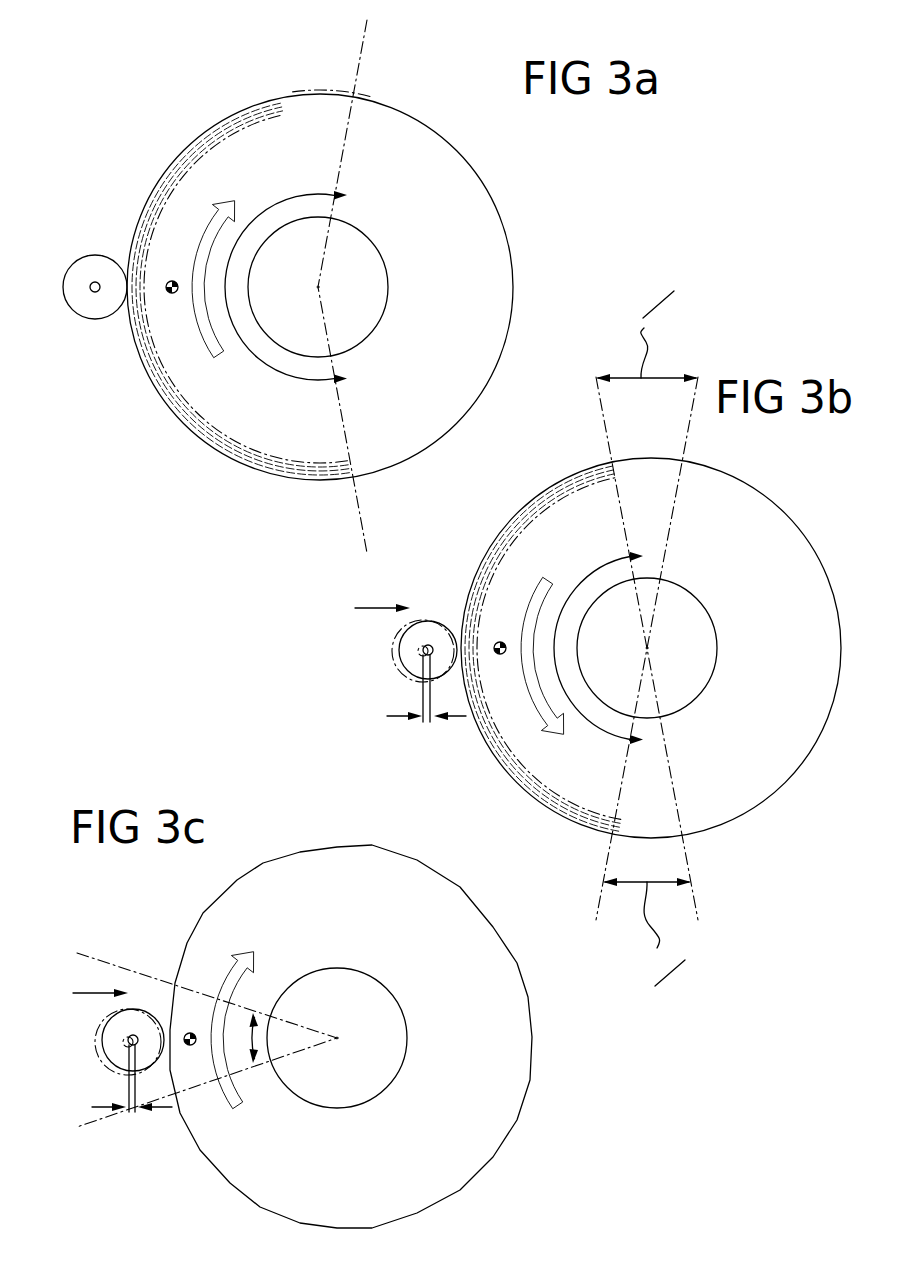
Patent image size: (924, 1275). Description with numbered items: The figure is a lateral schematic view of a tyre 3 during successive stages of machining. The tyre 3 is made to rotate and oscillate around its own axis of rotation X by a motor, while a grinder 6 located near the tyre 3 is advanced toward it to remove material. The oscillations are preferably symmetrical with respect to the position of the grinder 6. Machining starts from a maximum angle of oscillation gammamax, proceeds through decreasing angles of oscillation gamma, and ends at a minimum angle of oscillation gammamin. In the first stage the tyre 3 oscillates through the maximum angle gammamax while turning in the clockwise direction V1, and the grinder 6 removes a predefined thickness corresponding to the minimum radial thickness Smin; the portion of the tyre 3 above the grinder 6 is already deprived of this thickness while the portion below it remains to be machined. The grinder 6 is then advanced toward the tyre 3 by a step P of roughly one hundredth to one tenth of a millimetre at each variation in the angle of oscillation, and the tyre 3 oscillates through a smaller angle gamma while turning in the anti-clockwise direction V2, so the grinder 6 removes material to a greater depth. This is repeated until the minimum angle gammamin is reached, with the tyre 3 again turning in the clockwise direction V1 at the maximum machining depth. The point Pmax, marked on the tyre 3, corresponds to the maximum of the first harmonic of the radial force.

In FIG. 3A, the tyre 3 is at (531, 157).
In FIG. 3B, the tyre 3 is at (829, 503).
In FIG. 3C, the tyre 3 is at (522, 1188).
In FIG. 3A, the grinder 6 is at (89, 336).
In FIG. 3B, the grinder 6 is at (372, 640).
In FIG. 3C, the grinder 6 is at (78, 1015).
In FIG. 3A, the axis of rotation X is at (318, 287).
In FIG. 3B, the axis of rotation X is at (647, 648).
In FIG. 3C, the axis of rotation X is at (337, 1038).
In FIG. 3B, the step P is at (388, 716).
In FIG. 3C, the step P is at (102, 1100).
In FIG. 3A, the point Pmax is at (172, 284).
In FIG. 3B, the point Pmax is at (498, 645).
In FIG. 3C, the point Pmax is at (189, 1033).
In FIG. 3A, the clockwise direction V1 is at (218, 344).
In FIG. 3C, the clockwise direction V1 is at (228, 1093).
In FIG. 3B, the anti-clockwise direction V2 is at (527, 748).
In FIG. 3A, the minimum radial thickness Smin is at (316, 132).
In FIG. 3A, the maximum angle of oscillation gammamax is at (288, 196).
In FIG. 3B, the angle of oscillation gamma is at (597, 569).
In FIG. 3C, the minimum angle of oscillation gammamin is at (255, 1047).